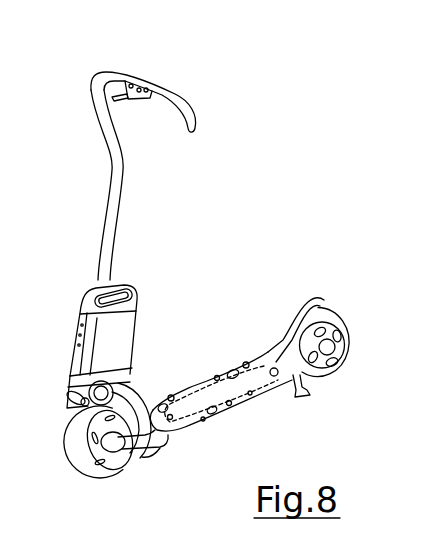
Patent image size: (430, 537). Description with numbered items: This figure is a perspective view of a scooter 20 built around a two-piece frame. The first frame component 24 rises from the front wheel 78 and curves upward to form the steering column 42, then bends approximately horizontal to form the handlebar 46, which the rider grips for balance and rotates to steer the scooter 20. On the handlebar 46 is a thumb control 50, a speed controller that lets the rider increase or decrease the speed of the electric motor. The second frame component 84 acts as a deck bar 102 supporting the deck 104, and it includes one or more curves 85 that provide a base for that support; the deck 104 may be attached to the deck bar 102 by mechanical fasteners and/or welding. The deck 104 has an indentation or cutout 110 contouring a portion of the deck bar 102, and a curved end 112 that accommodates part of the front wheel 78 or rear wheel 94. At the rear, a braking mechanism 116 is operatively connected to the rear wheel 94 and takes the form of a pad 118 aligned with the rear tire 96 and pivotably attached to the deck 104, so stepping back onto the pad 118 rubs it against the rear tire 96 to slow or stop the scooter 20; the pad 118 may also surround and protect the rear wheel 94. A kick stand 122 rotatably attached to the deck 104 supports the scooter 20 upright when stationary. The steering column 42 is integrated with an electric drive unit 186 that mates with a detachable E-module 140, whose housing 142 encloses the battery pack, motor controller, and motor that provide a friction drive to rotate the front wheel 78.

The scooter 20 is at (296, 101).
The first frame component 24 is at (118, 225).
The steering column 42 is at (115, 187).
The handlebar 46 is at (180, 95).
The thumb control 50 is at (118, 99).
The front wheel 78 is at (65, 443).
The second frame component 84 is at (166, 449).
The curves 85 is at (192, 378).
The rear wheel 94 is at (345, 307).
The rear tire 96 is at (326, 314).
The deck bar 102 is at (142, 458).
The deck 104 is at (218, 366).
The indentation or cutout 110 is at (183, 430).
The cutout or curved end 112 is at (188, 400).
The braking mechanism 116 is at (316, 303).
The pad 118 is at (303, 298).
The kick stand 122 is at (305, 390).
The detachable electronic drive module (E-module) 140 is at (75, 357).
The housing 142 is at (77, 372).
The electric drive unit 186 is at (140, 74).